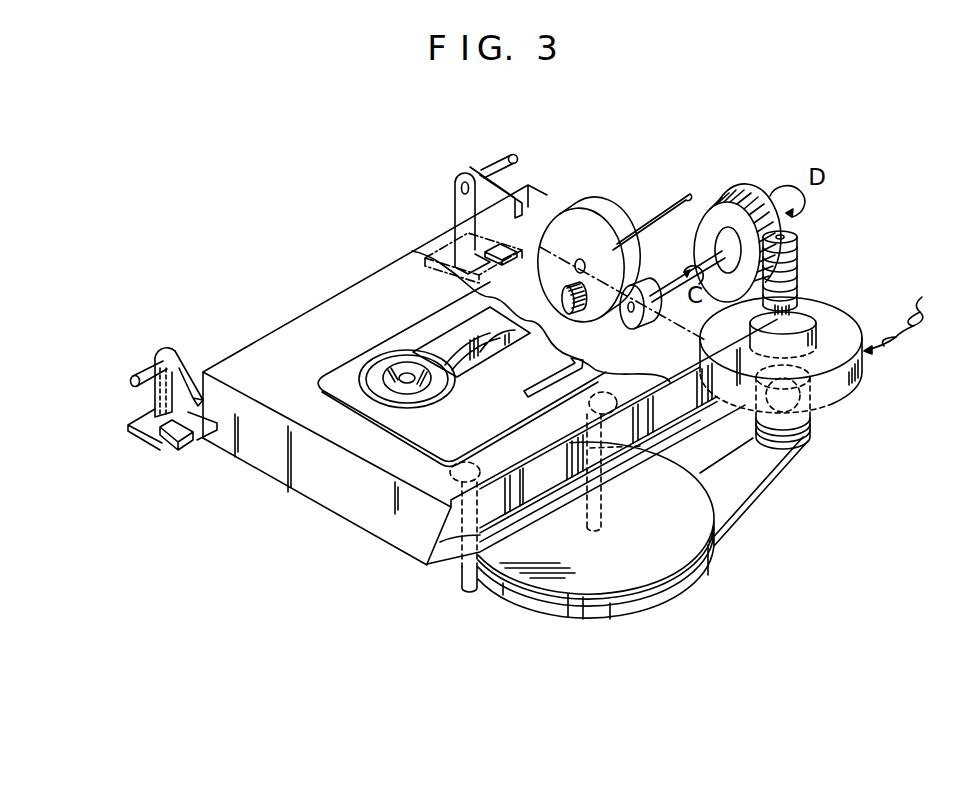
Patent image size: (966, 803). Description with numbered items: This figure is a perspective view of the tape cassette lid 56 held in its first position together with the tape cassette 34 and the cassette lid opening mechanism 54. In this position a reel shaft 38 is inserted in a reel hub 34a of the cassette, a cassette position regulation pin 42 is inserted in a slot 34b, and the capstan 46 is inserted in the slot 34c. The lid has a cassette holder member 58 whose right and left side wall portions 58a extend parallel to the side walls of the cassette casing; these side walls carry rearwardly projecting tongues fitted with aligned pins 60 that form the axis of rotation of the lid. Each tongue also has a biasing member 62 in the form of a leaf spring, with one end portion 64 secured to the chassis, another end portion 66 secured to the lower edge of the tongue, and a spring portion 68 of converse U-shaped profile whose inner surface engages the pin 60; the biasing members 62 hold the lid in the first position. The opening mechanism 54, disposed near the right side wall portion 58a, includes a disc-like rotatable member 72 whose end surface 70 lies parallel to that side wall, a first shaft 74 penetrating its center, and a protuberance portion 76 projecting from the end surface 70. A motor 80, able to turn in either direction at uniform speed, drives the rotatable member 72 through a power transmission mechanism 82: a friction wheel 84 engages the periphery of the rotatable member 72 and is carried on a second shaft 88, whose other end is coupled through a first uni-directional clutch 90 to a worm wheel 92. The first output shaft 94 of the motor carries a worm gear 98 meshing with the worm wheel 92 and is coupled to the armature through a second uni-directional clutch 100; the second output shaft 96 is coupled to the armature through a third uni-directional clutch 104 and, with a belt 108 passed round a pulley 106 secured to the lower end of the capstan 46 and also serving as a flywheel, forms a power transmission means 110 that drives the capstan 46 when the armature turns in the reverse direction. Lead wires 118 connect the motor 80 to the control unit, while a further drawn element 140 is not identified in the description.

The tape cassette 34 is at (445, 562).
The reel hubs 34a is at (454, 384).
The slots 34b is at (473, 466).
The slot 34c is at (598, 398).
The reel shaft 38 is at (416, 384).
The cassette position regulation pin 42 is at (468, 580).
The capstan 46 is at (604, 522).
The cassette lid opening mechanism 54 is at (773, 184).
The tape cassette lid 56 is at (313, 328).
The cassette holder member 58 is at (377, 528).
The side wall portions 58a is at (312, 504).
The pins 60 is at (142, 370).
The biasing members 62 is at (187, 360).
The end portion 64 is at (142, 430).
The end portion 66 is at (178, 443).
The spring portion 68 is at (170, 345).
The end surface 70 is at (550, 223).
The rotatable member 72 is at (594, 211).
The first shaft 74 is at (667, 210).
The protuberance portion 76 is at (583, 307).
The motor 80 is at (835, 306).
The power transmission mechanism 82 is at (710, 205).
The friction wheel 84 is at (656, 318).
The second shaft 88 is at (690, 276).
The first uni-directional clutch 90 is at (723, 305).
The worm wheel 92 is at (739, 188).
The first output shaft 94 is at (810, 312).
The second output shaft 96 is at (812, 412).
The worm gear 98 is at (800, 246).
The second uni-directional clutch 100 is at (845, 326).
The third uni-directional clutch 104 is at (840, 402).
The pulley 106 is at (688, 572).
The belt 108 is at (773, 476).
The power transmission means 110 is at (803, 455).
The lead wires 118 is at (911, 314).
The front frame 140 is at (544, 492).